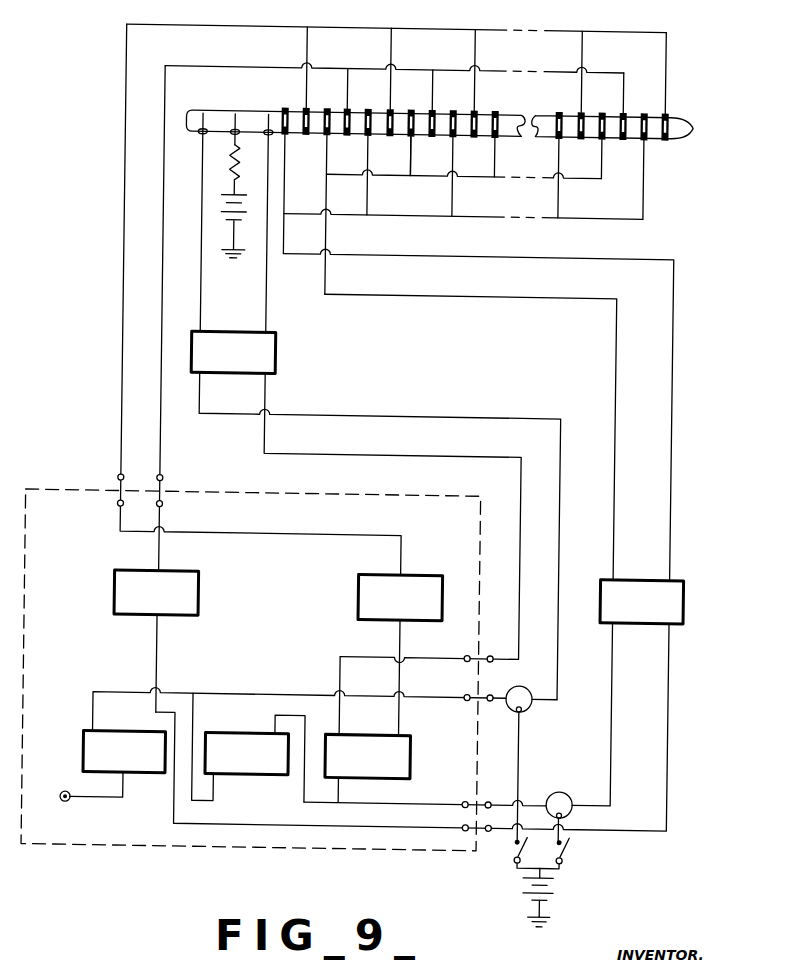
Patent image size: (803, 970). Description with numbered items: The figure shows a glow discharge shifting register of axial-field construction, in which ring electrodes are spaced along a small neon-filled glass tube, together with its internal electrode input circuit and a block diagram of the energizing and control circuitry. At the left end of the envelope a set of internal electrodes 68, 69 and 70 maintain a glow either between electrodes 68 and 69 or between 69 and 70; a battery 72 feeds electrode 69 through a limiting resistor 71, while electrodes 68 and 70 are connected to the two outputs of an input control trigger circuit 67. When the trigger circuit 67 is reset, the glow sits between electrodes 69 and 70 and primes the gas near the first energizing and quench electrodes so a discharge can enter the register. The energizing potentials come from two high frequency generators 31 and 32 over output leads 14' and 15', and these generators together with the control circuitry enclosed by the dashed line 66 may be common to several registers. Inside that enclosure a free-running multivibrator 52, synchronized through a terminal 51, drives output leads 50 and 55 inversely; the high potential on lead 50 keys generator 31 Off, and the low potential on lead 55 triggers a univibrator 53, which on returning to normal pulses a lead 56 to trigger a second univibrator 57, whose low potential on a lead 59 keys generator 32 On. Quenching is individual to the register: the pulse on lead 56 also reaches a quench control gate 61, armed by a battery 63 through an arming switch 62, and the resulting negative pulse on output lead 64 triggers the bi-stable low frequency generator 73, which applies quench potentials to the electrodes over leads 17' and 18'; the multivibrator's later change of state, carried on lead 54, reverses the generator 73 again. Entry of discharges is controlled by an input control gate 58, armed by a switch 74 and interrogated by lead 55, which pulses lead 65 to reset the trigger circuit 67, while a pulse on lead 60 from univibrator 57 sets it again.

The internal electrode 68 is at (187, 222).
The internal electrode 69 is at (223, 142).
The internal electrode 70 is at (248, 163).
The limiting resistor 71 is at (244, 210).
The battery 72 is at (245, 238).
The input control trigger circuit 67 is at (256, 352).
The quench lead 17' is at (469, 437).
The quench lead 18' is at (506, 415).
The lead 65 is at (379, 535).
The lead 60 is at (391, 529).
The energizing output lead 14' is at (187, 319).
The energizing output lead 15' is at (234, 299).
The high frequency generator 31 is at (177, 593).
The high frequency generator 32 is at (377, 597).
The output lead 50 is at (134, 663).
The output lead 55 is at (300, 696).
The lead 59 is at (376, 677).
The output lead 64 is at (588, 714).
The lead 54 is at (423, 727).
The bi-stable low frequency generator 73 is at (666, 602).
The input control gate 58 is at (544, 709).
The free-running multivibrator 52 is at (102, 751).
The univibrator 57 is at (391, 756).
The univibrator 53 is at (248, 755).
The lead 56 is at (425, 804).
The terminal 51 is at (78, 803).
The dashed line 66 is at (251, 687).
The quench control gate 61 is at (572, 801).
The arming switch 74 is at (506, 862).
The arming switch 62 is at (567, 863).
The battery 63 is at (562, 898).